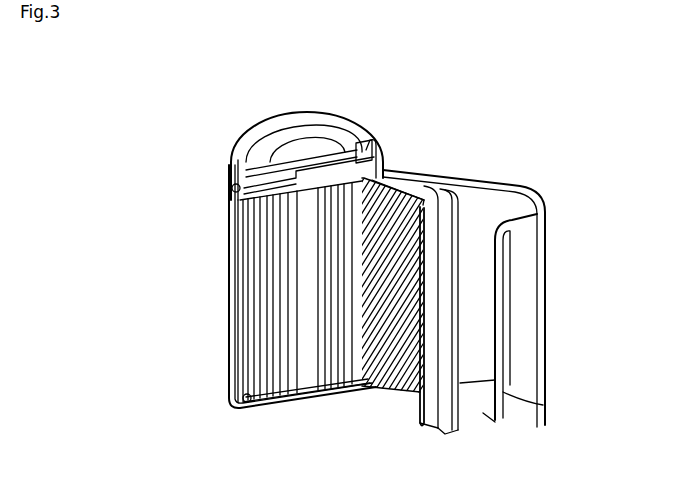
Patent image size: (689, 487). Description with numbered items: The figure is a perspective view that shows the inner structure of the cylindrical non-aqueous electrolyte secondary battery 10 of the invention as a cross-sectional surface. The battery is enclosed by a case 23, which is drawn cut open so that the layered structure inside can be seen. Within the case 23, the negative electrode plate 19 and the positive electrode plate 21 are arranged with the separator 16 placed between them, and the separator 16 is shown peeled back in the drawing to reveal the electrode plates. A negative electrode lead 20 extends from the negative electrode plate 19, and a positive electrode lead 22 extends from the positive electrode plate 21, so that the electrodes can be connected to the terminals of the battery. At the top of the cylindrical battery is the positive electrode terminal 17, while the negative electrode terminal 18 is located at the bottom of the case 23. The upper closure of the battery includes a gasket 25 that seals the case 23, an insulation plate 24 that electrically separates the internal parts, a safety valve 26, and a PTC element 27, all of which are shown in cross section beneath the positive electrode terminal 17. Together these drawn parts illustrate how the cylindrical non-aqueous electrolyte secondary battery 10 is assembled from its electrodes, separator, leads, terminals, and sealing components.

The cylindrical non-aqueous electrolyte secondary battery 10 is at (410, 128).
The separator 16 is at (458, 206).
The positive electrode terminal 17 is at (283, 135).
The negative electrode terminal 18 is at (269, 406).
The negative electrode plate 19 is at (515, 270).
The negative electrode lead 20 is at (507, 350).
The positive electrode plate 21 is at (432, 420).
The positive electrode lead 22 is at (385, 168).
The case 23 is at (228, 292).
The insulation plate 24 is at (233, 190).
The gasket 25 is at (238, 143).
The safety valve 26 is at (306, 163).
The PTC element 27 is at (342, 135).